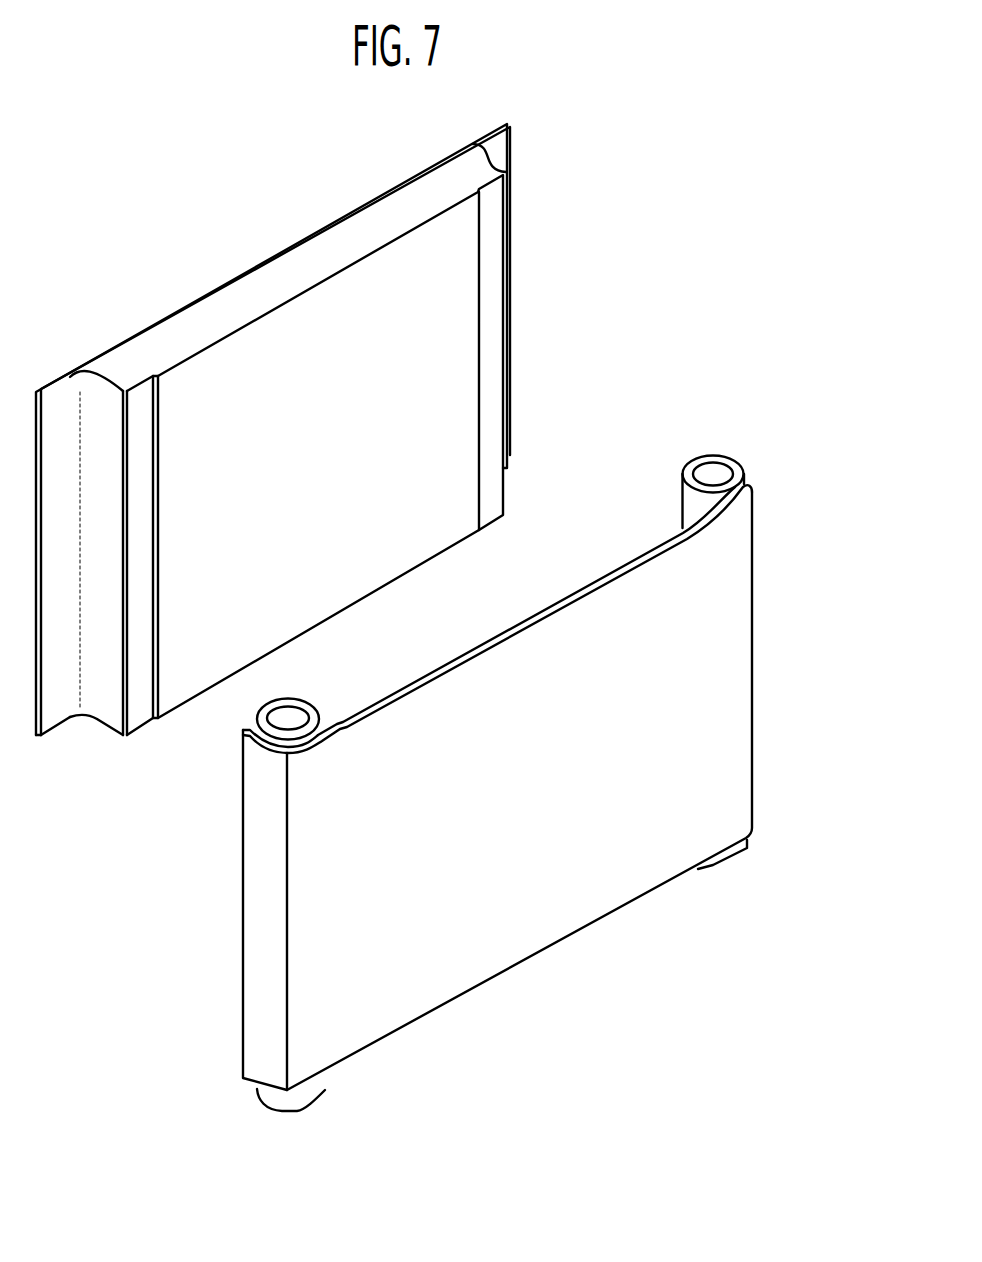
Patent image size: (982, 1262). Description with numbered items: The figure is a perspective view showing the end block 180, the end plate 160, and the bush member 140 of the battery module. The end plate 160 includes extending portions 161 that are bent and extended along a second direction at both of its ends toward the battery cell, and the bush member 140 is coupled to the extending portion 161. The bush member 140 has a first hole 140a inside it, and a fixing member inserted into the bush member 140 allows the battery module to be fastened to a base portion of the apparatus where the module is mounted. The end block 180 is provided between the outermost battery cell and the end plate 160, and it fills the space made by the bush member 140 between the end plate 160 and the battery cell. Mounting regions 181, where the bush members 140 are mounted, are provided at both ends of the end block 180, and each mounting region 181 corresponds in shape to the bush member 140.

The end block 180 is at (278, 262).
The mounting region 181 is at (105, 407).
The bush member 140 is at (497, 590).
The first hole 140a is at (715, 470).
The end plate 160 is at (453, 801).
The extending portion 161 is at (255, 915).